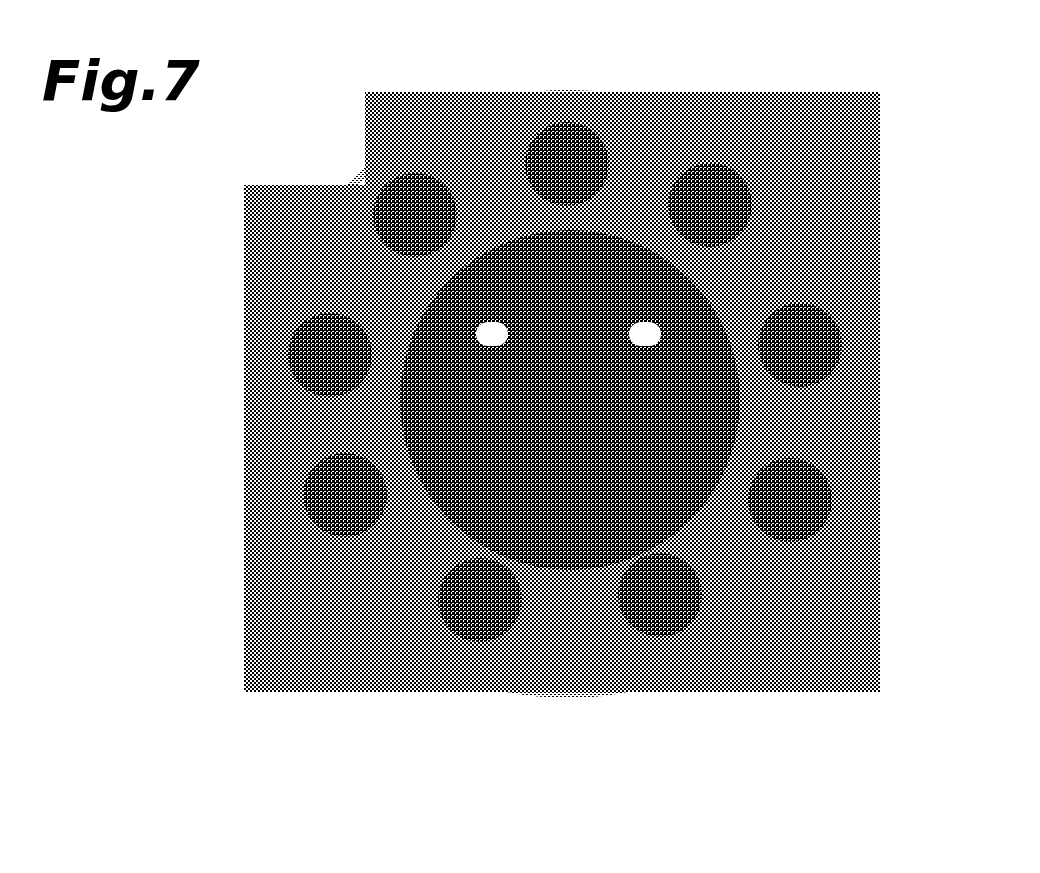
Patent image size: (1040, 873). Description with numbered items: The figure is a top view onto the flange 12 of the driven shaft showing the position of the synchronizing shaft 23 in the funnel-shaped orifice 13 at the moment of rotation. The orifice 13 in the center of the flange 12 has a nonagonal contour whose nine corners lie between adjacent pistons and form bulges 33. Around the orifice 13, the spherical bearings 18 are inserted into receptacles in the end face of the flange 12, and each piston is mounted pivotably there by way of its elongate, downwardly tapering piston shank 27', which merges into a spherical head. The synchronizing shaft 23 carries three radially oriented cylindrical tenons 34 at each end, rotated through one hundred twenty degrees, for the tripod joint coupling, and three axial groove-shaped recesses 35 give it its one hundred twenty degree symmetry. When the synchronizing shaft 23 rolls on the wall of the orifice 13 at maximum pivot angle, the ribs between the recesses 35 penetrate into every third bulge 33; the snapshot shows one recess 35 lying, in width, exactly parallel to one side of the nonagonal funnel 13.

The flange 12 is at (857, 440).
The funnel-shaped orifice 13 is at (588, 545).
The spherical bearing 18 is at (300, 544).
The synchronizing shaft 23 is at (543, 283).
The piston shank 27' is at (565, 321).
The bulge 33 is at (732, 305).
The cylindrical tenon 34 is at (462, 342).
The groove-shaped recess 35 is at (651, 455).